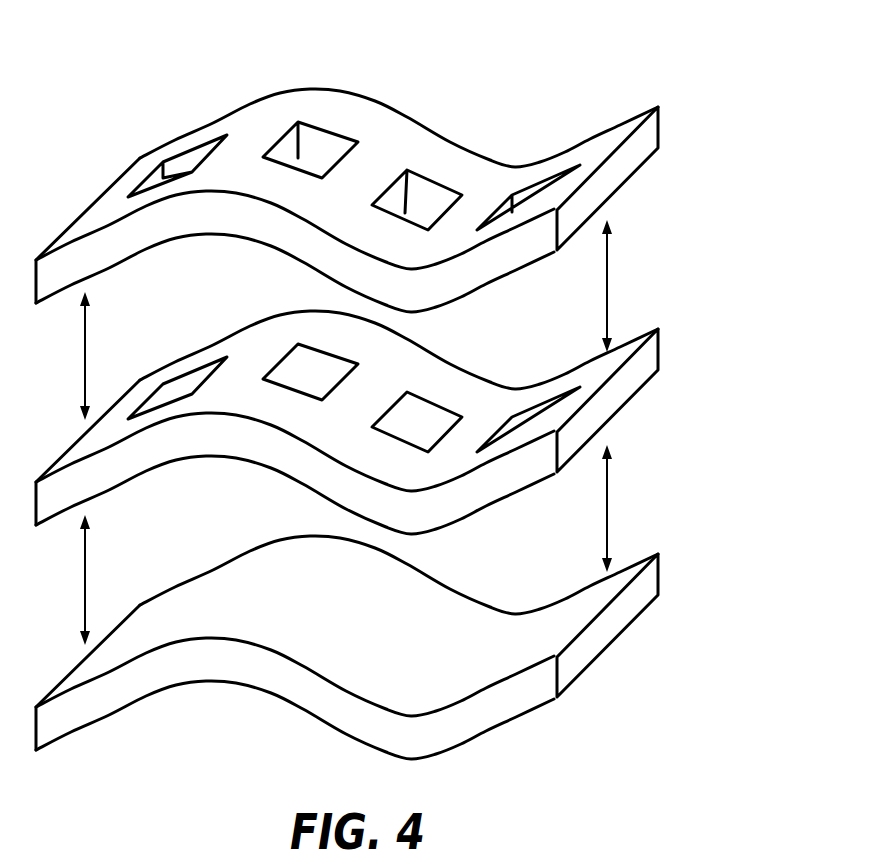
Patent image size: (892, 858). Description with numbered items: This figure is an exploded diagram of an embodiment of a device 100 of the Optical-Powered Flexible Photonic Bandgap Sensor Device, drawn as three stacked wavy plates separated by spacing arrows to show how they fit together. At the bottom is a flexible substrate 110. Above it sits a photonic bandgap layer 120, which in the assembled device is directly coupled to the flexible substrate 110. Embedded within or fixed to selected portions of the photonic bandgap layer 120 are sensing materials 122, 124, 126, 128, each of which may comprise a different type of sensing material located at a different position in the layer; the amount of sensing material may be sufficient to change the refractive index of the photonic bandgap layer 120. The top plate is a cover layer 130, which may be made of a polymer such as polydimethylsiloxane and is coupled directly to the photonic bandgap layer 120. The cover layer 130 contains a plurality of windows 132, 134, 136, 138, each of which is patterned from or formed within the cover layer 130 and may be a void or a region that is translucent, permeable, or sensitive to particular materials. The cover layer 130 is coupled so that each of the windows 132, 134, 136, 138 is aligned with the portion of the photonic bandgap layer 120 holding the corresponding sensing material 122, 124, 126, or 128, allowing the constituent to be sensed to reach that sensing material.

The device 100 is at (722, 108).
The cover layer 130 is at (627, 155).
The window 132 is at (178, 165).
The window 134 is at (322, 143).
The window 136 is at (423, 195).
The window 138 is at (530, 200).
The photonic bandgap layer 120 is at (627, 380).
The sensing material 122 is at (173, 392).
The sensing material 124 is at (295, 370).
The sensing material 126 is at (422, 420).
The sensing material 128 is at (528, 418).
The flexible substrate 110 is at (627, 605).